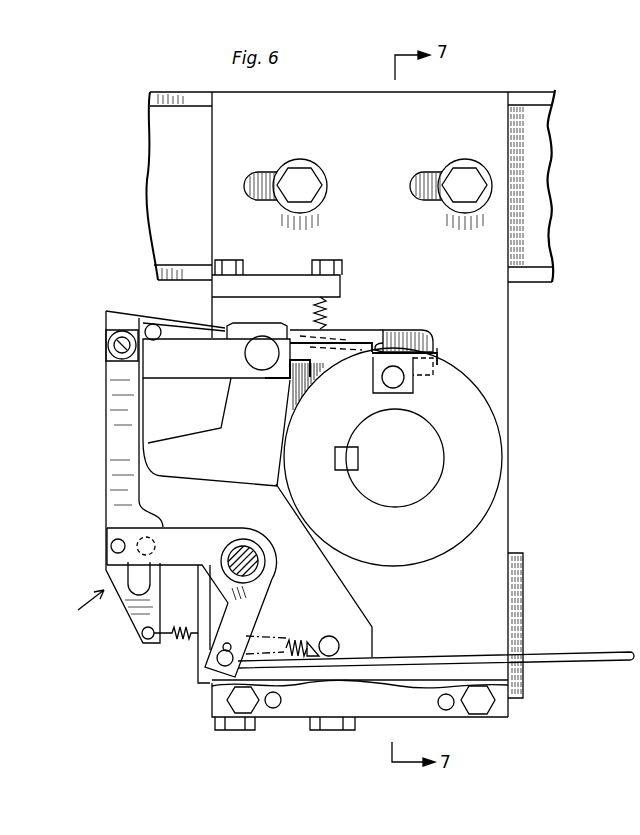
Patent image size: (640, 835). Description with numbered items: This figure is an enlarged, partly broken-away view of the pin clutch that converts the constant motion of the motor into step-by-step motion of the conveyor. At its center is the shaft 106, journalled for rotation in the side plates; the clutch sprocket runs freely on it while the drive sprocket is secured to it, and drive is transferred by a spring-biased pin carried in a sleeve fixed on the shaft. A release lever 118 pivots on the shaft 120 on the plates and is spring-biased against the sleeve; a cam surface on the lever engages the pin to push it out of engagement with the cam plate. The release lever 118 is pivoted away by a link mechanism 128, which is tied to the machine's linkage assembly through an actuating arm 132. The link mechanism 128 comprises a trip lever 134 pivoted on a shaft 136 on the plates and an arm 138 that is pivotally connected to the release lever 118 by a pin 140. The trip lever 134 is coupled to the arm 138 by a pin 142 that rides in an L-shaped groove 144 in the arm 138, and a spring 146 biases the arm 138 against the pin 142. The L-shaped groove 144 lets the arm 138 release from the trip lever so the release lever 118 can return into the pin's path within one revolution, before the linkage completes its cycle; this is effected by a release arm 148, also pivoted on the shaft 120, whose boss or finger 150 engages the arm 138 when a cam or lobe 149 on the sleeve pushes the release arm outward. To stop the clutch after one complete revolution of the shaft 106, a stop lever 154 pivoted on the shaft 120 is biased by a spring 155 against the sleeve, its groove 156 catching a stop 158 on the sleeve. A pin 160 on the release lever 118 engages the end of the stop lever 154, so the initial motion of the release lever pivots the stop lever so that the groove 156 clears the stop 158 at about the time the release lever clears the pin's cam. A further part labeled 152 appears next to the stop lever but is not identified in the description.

The shaft 106 is at (418, 437).
The release lever 118 is at (197, 325).
The shaft 120 is at (264, 340).
The link mechanism 128 is at (72, 606).
The actuating arm 132 is at (567, 659).
The trip lever 134 is at (243, 539).
The shaft 136 is at (263, 572).
The arm 138 is at (106, 404).
The pin 140 is at (108, 347).
The pin 142 is at (112, 548).
The L-shaped groove 144 is at (192, 513).
The spring 146 is at (183, 644).
The release arm 148 is at (240, 396).
The cam or lobe 149 is at (346, 334).
The boss or finger 150 is at (162, 447).
The stop 152 is at (440, 355).
The stop lever 154 is at (428, 331).
The spring 155 is at (332, 310).
The groove 156 is at (377, 365).
The stop 158 is at (381, 337).
The pin 160 is at (156, 325).